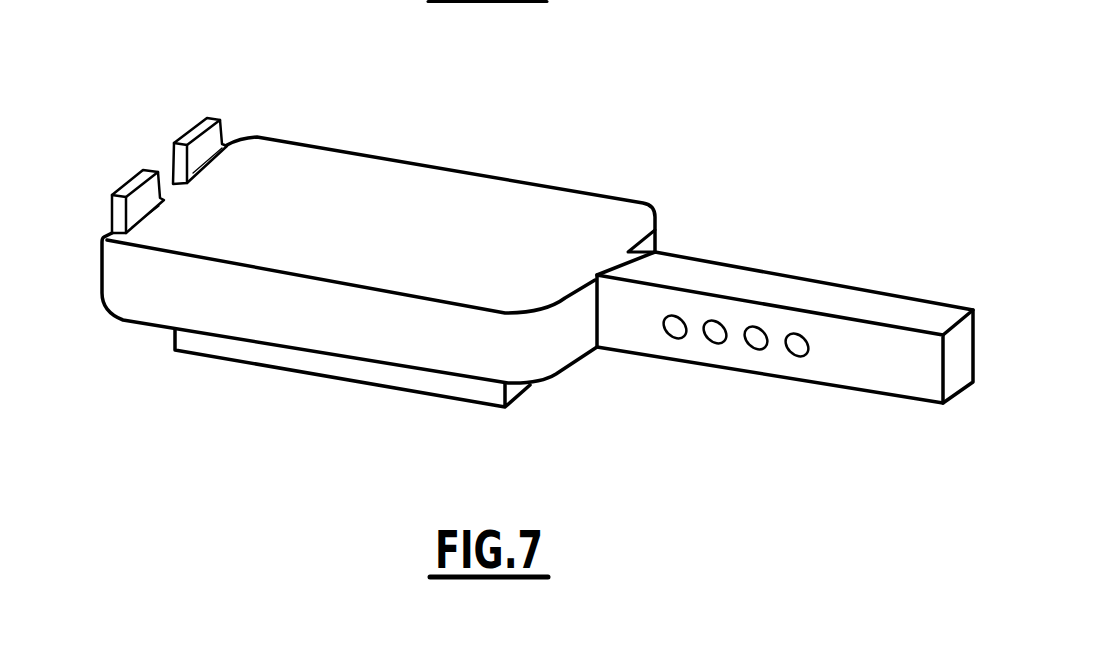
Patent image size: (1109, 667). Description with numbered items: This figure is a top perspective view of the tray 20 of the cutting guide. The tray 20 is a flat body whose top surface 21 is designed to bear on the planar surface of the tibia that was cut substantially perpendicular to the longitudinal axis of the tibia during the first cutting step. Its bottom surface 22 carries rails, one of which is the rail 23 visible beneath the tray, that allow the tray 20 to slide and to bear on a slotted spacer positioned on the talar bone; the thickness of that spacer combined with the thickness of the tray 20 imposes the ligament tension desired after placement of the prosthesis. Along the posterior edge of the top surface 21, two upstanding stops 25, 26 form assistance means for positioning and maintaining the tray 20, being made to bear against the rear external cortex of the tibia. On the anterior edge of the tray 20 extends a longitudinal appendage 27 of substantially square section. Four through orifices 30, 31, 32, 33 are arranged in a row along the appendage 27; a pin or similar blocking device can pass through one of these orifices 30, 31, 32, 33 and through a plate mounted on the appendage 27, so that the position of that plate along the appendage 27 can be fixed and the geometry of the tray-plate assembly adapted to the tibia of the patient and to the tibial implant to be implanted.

The tray 20 is at (136, 89).
The top surface 21 is at (423, 215).
The bottom surface 22 is at (146, 327).
The rail 23 is at (290, 360).
The stop 25 is at (139, 196).
The stop 26 is at (200, 148).
The longitudinal appendage 27 is at (868, 307).
The through orifice 30 is at (675, 328).
The through orifice 31 is at (715, 333).
The through orifice 32 is at (756, 340).
The through orifice 33 is at (797, 347).